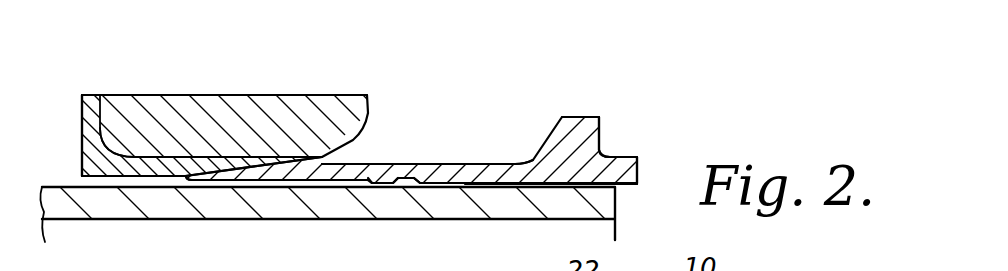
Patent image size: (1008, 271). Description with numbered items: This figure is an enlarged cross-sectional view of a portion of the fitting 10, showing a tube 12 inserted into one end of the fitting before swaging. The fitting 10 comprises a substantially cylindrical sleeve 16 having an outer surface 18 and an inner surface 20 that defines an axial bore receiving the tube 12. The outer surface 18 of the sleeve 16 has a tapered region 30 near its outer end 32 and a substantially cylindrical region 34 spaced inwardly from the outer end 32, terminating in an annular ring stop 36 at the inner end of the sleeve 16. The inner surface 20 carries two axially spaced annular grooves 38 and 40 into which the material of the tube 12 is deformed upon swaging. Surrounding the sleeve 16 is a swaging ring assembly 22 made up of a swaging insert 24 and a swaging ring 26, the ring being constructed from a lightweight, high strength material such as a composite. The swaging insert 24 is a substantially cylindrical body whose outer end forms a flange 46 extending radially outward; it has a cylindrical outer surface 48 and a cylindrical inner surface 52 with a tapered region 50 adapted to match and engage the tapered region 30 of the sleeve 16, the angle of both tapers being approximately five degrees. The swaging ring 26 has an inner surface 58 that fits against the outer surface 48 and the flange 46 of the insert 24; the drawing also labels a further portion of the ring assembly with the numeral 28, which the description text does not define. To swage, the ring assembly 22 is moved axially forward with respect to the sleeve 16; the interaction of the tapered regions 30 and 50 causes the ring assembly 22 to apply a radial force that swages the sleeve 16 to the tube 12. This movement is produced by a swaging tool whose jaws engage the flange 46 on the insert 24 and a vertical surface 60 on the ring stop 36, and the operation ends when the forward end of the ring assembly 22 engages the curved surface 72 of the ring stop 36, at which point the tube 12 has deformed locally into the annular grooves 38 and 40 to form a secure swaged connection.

The fitting 10 is at (612, 87).
The tube 12 is at (52, 187).
The sleeve 16 is at (640, 172).
The outer surface 18 is at (382, 163).
The inner surface 20 is at (533, 187).
The swaging ring assembly 22 is at (147, 68).
The swaging insert 24 is at (90, 95).
The swaging ring 26 is at (289, 95).
The shoulder 28 is at (622, 153).
The tapered region 30 is at (245, 163).
The outer end 32 is at (178, 180).
The cylindrical region 34 is at (432, 164).
The ring stop 36 is at (575, 117).
The annular groove 38 is at (373, 183).
The annular groove 40 is at (440, 183).
The flange 46 is at (82, 121).
The outer surface 48 is at (142, 151).
The tapered region 50 is at (193, 183).
The inner surface 52 is at (103, 178).
The inner surface 58 is at (286, 180).
The vertical surface 60 is at (603, 131).
The curved surface 72 is at (538, 152).